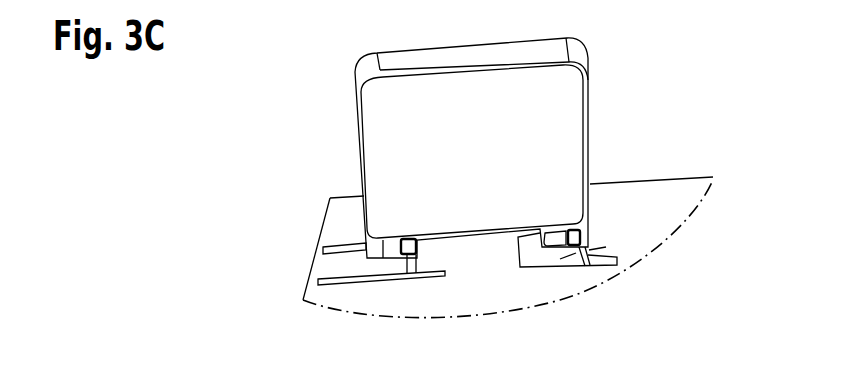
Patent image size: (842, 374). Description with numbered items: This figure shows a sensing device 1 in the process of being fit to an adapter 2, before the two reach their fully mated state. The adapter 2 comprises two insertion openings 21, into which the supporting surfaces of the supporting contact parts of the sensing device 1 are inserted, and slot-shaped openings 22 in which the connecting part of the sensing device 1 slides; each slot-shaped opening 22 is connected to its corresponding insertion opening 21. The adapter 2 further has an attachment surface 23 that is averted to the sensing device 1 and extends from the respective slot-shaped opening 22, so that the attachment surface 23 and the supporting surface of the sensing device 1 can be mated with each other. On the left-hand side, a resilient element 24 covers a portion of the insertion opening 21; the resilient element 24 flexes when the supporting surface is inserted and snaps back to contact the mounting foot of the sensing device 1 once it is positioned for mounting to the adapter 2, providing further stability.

The sensing device 1 is at (603, 72).
The adapter 2 is at (676, 206).
The insertion opening 21 is at (586, 242).
The slot-shaped opening 22 is at (320, 278).
The attachment surface 23 is at (435, 257).
The resilient element 24 is at (361, 265).